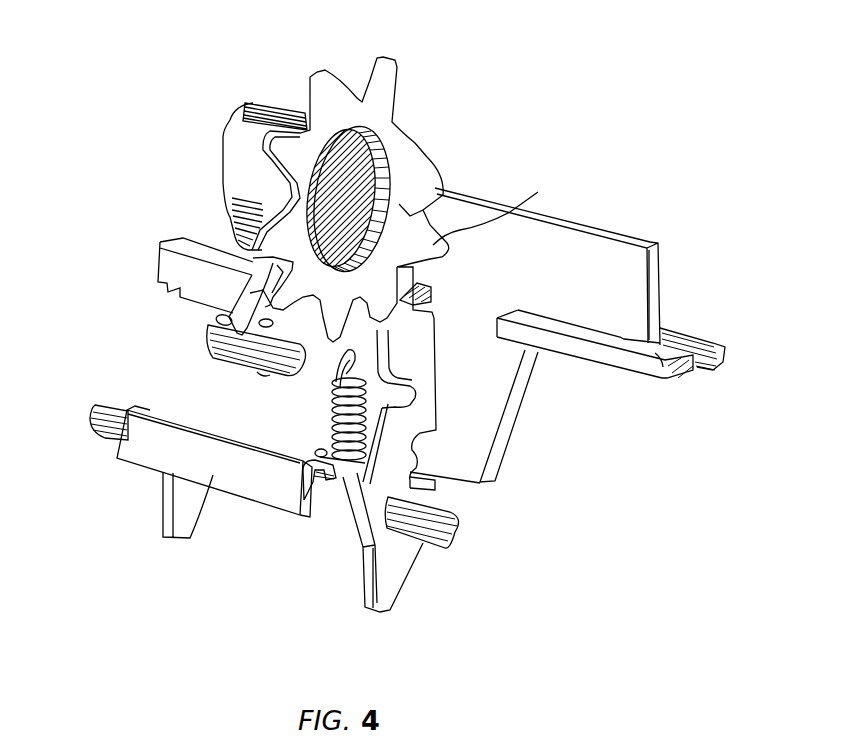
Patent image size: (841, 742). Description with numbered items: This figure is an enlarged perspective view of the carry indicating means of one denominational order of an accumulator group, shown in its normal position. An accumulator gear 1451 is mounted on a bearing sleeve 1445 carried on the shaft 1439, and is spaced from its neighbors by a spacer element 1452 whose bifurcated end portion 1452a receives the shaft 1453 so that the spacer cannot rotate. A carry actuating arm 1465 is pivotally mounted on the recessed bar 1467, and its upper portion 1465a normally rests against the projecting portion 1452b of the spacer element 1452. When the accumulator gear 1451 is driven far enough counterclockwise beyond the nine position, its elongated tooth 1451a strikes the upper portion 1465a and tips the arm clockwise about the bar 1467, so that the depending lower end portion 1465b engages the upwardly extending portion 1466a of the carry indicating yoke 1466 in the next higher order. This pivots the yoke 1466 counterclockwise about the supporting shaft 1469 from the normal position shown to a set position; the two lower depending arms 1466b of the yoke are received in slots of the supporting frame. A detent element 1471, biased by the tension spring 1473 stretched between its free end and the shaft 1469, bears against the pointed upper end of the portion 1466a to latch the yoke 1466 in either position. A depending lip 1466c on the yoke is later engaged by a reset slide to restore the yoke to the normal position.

The shaft 1439 is at (385, 148).
The bearing sleeve 1445 is at (233, 140).
The accumulator gear 1451 is at (340, 90).
The elongated tooth 1451a is at (513, 212).
The spacer element 1452 is at (403, 138).
The bifurcated end portion 1452a is at (216, 323).
The projecting portion 1452b is at (410, 178).
The shaft 1453 is at (210, 347).
The carry actuating arm 1465 is at (580, 238).
The upper portion 1465a is at (620, 257).
The depending lower end portion 1465b is at (433, 452).
The carry indicating yoke 1466 is at (707, 352).
The upwardly extending portion 1466a is at (460, 514).
The lower depending arm 1466b is at (170, 508).
The depending lip 1466c is at (233, 480).
The recessed bar 1467 is at (662, 378).
The supporting shaft 1469 is at (113, 418).
The detent element 1471 is at (158, 294).
The tension spring 1473 is at (332, 408).